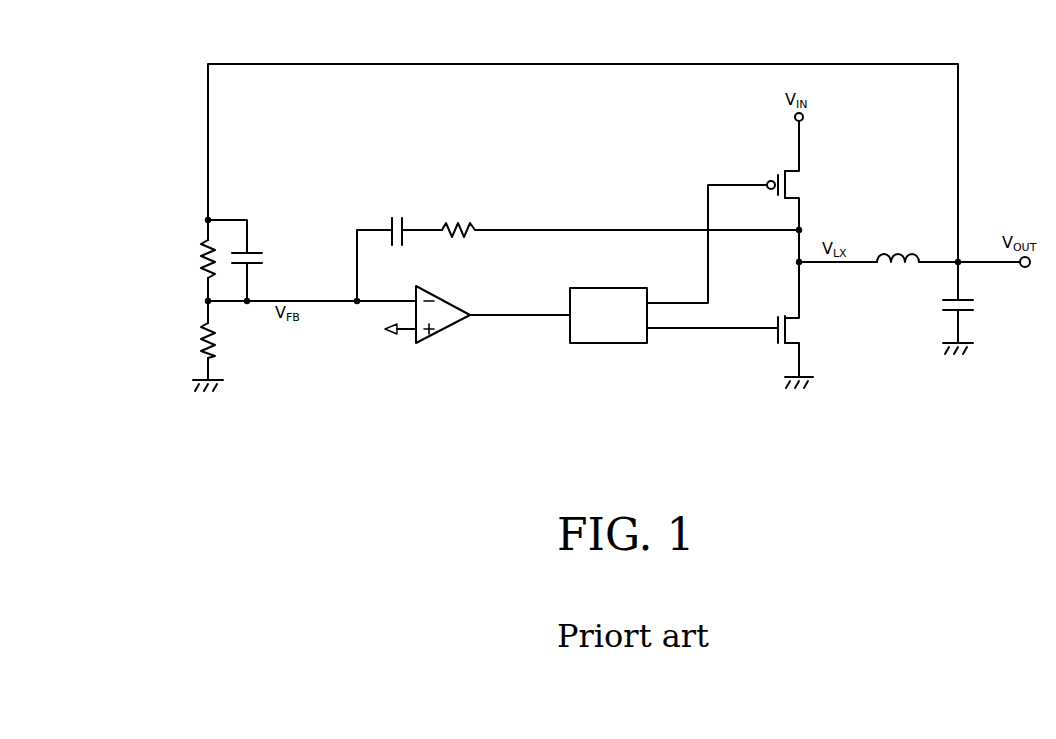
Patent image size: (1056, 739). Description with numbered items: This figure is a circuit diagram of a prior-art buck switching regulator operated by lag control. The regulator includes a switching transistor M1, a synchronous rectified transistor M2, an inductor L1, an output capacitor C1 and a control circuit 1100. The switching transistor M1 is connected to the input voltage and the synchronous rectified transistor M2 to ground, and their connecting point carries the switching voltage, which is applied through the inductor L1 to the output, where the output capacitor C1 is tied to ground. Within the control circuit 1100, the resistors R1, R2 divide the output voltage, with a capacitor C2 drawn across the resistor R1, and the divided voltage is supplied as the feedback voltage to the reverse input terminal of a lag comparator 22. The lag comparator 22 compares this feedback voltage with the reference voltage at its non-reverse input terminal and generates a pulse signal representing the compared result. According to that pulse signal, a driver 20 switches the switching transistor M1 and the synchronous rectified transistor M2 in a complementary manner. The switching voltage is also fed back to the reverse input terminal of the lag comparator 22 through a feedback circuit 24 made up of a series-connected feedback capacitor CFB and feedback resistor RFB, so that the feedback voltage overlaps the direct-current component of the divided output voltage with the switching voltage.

The control circuit 1100 is at (672, 445).
The driver 20 is at (617, 345).
The lag comparator 22 is at (443, 330).
The feedback circuit 24 is at (431, 189).
The resistor R1 is at (197, 271).
The resistor R2 is at (197, 354).
The capacitor C2 is at (268, 259).
The feedback capacitor CFB is at (396, 212).
The feedback resistor RFB is at (461, 216).
The switching transistor M1 is at (805, 185).
The synchronous rectified transistor M2 is at (805, 330).
The inductor L1 is at (903, 250).
The output capacitor C1 is at (976, 308).